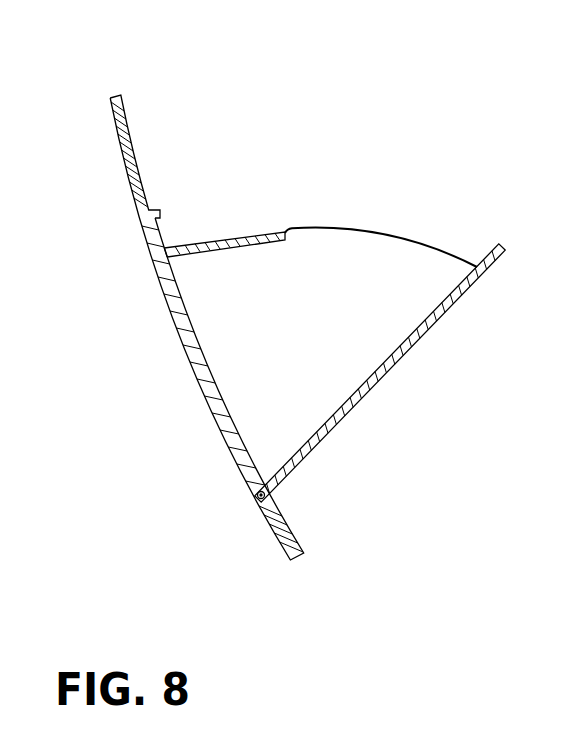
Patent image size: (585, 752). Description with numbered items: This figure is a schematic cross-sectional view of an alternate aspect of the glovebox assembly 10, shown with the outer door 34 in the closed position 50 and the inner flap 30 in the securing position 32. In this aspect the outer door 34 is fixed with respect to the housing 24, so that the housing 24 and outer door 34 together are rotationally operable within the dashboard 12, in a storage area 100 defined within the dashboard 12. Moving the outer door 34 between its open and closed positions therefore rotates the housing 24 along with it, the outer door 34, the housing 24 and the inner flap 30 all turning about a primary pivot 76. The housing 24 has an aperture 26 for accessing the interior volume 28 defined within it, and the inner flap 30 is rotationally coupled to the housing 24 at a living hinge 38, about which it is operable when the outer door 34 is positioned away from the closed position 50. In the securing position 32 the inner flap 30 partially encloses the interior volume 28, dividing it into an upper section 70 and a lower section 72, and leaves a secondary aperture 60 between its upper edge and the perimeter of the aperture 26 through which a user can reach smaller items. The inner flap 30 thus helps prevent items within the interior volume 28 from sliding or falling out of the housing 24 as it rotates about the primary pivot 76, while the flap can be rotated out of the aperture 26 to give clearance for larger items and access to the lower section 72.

The glovebox assembly 10 is at (322, 137).
The storage area 100 is at (157, 103).
The dashboard 12 is at (110, 138).
The housing 24 is at (337, 428).
The aperture 26 is at (367, 230).
The interior volume 28 is at (353, 343).
The inner flap 30 is at (193, 238).
The securing position 32 is at (237, 230).
The outer door 34 is at (173, 313).
The living hinge 38 is at (168, 258).
The closed position 50 is at (197, 442).
The secondary aperture 60 is at (288, 235).
The upper section 70 is at (436, 279).
The lower section 72 is at (235, 375).
The primary pivot 76 is at (258, 497).